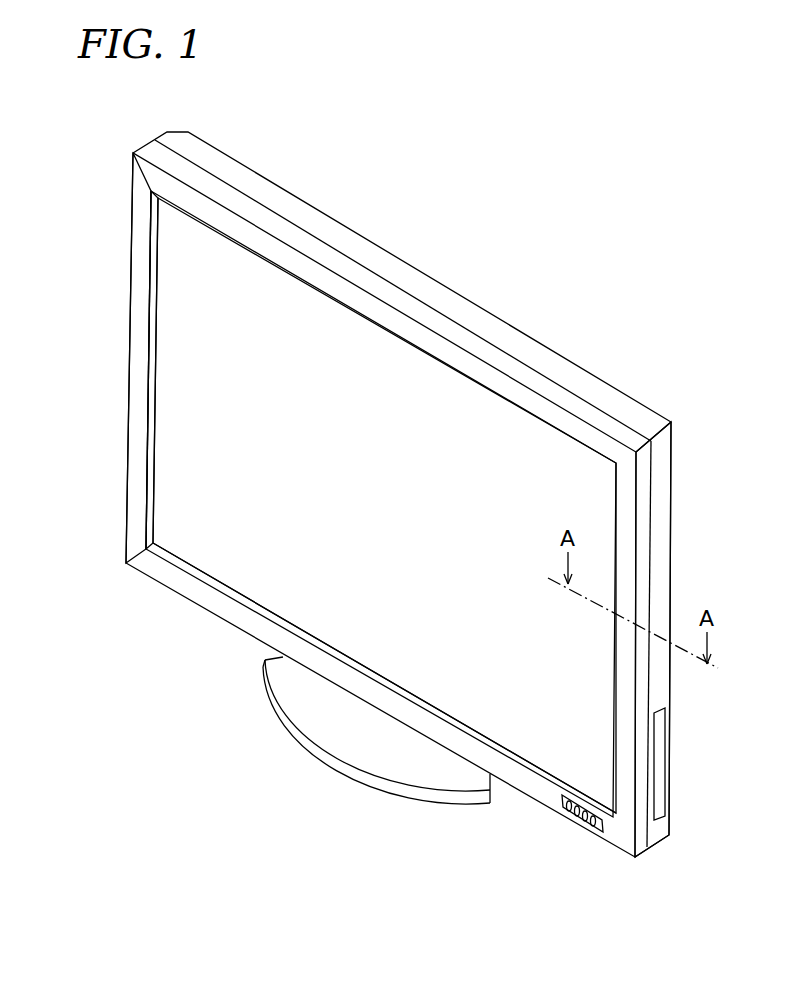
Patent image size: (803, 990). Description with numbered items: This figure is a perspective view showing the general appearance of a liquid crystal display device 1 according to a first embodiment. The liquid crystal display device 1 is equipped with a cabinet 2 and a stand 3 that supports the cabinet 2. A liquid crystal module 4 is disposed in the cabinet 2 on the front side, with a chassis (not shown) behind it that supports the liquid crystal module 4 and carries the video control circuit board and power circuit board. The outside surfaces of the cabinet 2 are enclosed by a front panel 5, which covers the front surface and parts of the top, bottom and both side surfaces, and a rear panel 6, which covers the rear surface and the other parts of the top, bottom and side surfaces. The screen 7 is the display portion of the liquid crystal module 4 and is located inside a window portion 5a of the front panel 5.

The liquid crystal display device 1 is at (470, 226).
The cabinet 2 is at (513, 326).
The stand 3 is at (278, 720).
The liquid crystal module 4 is at (193, 292).
The front panel 5 is at (127, 356).
The window portion 5a is at (153, 465).
The rear panel 6 is at (673, 507).
The screen 7 is at (273, 498).